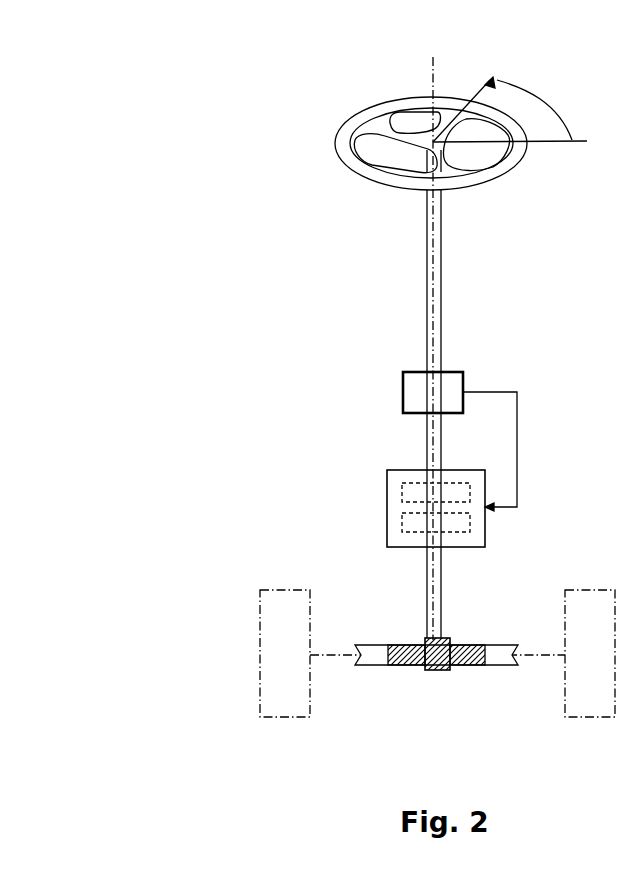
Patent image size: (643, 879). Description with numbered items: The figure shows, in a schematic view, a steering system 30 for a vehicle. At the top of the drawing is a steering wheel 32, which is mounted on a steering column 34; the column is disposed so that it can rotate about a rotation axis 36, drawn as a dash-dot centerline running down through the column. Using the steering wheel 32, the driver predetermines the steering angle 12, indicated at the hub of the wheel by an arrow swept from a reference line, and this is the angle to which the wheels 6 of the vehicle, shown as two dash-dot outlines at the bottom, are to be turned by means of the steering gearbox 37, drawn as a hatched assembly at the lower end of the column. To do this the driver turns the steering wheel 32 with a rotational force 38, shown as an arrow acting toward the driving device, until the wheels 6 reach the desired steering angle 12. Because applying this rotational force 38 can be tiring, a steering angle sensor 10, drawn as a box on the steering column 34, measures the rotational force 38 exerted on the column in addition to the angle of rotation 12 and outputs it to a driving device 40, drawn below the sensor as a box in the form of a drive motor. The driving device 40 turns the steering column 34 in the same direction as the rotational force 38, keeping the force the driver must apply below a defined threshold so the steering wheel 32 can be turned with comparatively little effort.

The steering system 30 is at (153, 132).
The steering wheel 32 is at (350, 115).
The rotation axis 36 is at (433, 57).
The steering angle 12 is at (560, 108).
The steering column 34 is at (442, 253).
The steering angle sensor 10 is at (463, 380).
The rotational force 38 is at (517, 453).
The driving device 40 is at (407, 470).
The steering gearbox 37 is at (397, 645).
The wheels 6 is at (293, 590).